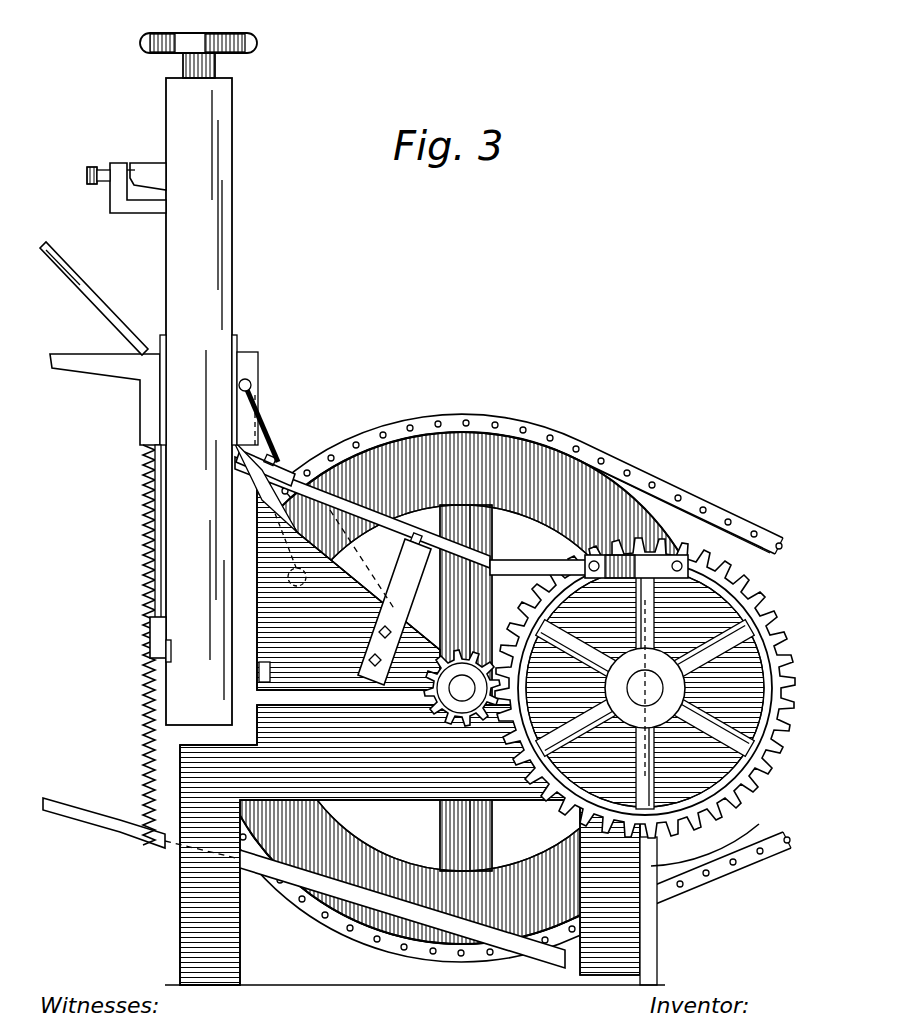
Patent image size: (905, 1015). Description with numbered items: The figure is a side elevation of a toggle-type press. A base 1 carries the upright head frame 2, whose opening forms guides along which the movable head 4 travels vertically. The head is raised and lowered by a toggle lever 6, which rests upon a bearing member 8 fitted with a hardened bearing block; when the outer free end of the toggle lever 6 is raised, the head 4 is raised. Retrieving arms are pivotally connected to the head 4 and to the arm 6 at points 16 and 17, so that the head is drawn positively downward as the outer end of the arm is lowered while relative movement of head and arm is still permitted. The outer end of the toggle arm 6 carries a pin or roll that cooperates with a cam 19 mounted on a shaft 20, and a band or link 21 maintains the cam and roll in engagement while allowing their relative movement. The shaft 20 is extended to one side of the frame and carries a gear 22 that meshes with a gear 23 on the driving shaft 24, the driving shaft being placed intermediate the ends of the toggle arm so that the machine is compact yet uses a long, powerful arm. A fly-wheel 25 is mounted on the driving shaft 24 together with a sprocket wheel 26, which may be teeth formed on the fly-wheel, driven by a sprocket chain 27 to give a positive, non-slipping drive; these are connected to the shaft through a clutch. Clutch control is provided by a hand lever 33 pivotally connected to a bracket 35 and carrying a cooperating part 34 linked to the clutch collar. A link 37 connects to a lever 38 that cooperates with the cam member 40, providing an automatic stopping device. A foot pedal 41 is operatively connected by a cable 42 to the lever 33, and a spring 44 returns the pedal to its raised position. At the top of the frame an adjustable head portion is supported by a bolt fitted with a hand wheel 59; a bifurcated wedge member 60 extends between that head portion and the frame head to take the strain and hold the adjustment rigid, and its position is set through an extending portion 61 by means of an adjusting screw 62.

The base 1 is at (432, 785).
The head frame 2 is at (229, 285).
The movable head 4 is at (150, 406).
The toggle lever 6 is at (487, 583).
The bearing member 8 is at (150, 640).
The pivot point 16 is at (251, 388).
The pivot point 17 is at (288, 578).
The cam 19 is at (700, 728).
The shaft 20 is at (640, 690).
The band or link 21 is at (645, 688).
The gear 22 is at (748, 612).
The gear 23 is at (470, 718).
The driving shaft 24 is at (458, 690).
The fly-wheel 25 is at (490, 462).
The sprocket wheel 26 is at (650, 500).
The sprocket chain 27 is at (568, 448).
The hand lever 33 is at (100, 318).
The cooperating part 34 is at (398, 574).
The bracket 35 is at (662, 930).
The link 37 is at (268, 458).
The lever 38 is at (512, 566).
The cam member 40 is at (660, 556).
The foot pedal 41 is at (75, 812).
The cable 42 is at (146, 532).
The spring 44 is at (150, 576).
The hand wheel 59 is at (258, 45).
The wedge member 60 is at (146, 168).
The extending portion 61 is at (120, 168).
The adjusting screw 62 is at (86, 174).